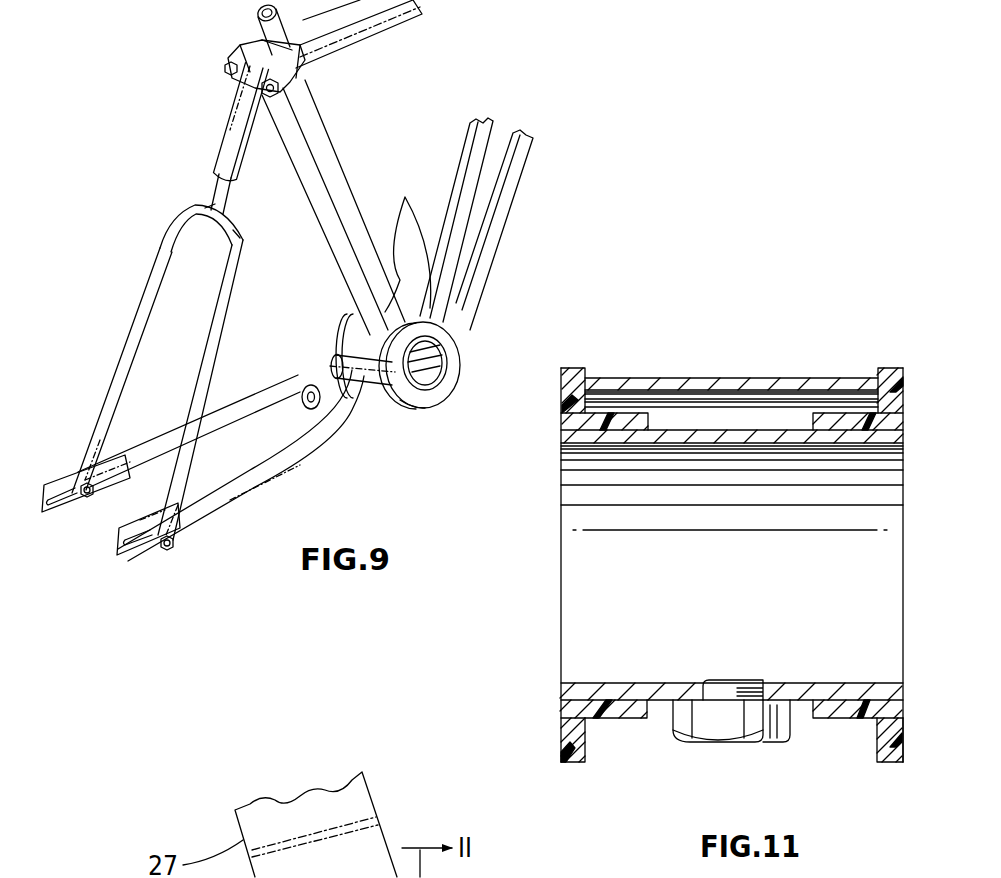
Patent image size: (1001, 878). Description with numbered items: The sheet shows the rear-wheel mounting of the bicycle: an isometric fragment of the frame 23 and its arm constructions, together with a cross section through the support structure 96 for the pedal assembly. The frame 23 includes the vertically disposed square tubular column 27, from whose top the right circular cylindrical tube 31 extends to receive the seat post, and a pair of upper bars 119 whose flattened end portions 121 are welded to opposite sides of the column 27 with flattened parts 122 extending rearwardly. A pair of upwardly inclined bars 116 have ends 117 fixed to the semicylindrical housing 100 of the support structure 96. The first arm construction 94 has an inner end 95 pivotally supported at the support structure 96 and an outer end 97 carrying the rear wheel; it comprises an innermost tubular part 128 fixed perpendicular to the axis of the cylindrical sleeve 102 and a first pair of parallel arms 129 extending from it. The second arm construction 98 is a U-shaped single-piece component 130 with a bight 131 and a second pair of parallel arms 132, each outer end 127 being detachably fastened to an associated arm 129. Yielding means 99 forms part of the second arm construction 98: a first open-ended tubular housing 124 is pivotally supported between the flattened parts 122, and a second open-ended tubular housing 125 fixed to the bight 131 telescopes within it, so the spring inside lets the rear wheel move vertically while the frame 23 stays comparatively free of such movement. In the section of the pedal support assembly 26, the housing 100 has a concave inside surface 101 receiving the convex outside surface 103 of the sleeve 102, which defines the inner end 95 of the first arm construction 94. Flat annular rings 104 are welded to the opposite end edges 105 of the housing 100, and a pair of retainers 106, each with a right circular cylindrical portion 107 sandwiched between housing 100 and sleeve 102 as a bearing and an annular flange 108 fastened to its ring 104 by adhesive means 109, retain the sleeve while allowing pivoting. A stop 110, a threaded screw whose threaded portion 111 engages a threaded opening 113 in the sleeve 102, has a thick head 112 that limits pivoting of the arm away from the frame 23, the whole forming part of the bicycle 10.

In FIG. 9, the bicycle 10 is at (332, 365).
In FIG. 9, the frame 23 is at (348, 164).
In FIG. 11, the pedal crank bearing assembly 26 is at (871, 348).
In FIG. 9, the tubular column 27 is at (337, 133).
In FIG. 9, the right circular cylindrical tube 31 is at (258, 26).
In FIG. 9, the first arm construction 94 is at (325, 440).
In FIG. 9, the inner end 95 is at (318, 378).
In FIG. 9, the support structure 96 is at (462, 352).
In FIG. 9, the outer end 97 is at (200, 520).
In FIG. 9, the second arm construction 98 is at (160, 222).
In FIG. 9, the yielding means 99 is at (213, 130).
In FIG. 11, the semicylindrical housing 100 is at (718, 377).
In FIG. 11, the concave inside surface 101 is at (773, 403).
In FIG. 9, the cylindrical sleeve 102 is at (442, 384).
In FIG. 11, the cylindrical sleeve 102 is at (657, 703).
In FIG. 11, the convex outside surface 103 is at (727, 433).
In FIG. 11, the flat annular rings 104 is at (570, 723).
In FIG. 11, the end edges 105 is at (582, 377).
In FIG. 9, the retainers 106 is at (425, 400).
In FIG. 11, the retainers 106 is at (903, 748).
In FIG. 11, the right circular cylindrical portion 107 is at (627, 423).
In FIG. 11, the annular flange 108 is at (903, 400).
In FIG. 11, the adhesive means 109 is at (585, 733).
In FIG. 11, the stop 110 is at (762, 744).
In FIG. 11, the threaded portion 111 is at (688, 687).
In FIG. 11, the head 112 is at (737, 743).
In FIG. 11, the threaded opening 113 is at (710, 680).
In FIG. 9, the upwardly inclined bars 116 is at (495, 127).
In FIG. 9, the opposite ends 117 is at (403, 247).
In FIG. 9, the upper bars 119 is at (405, 25).
In FIG. 9, the flattened end portions 121 is at (255, 50).
In FIG. 9, the flattened parts 122 is at (252, 78).
In FIG. 9, the first open-ended tubular housing 124 is at (210, 145).
In FIG. 9, the second open-ended tubular housing 125 is at (205, 190).
In FIG. 9, the outer end 127 is at (90, 437).
In FIG. 9, the innermost tubular part 128 is at (338, 318).
In FIG. 9, the first pair of parallel arms 129 is at (150, 430).
In FIG. 9, the U-shaped single-piece component 130 is at (240, 236).
In FIG. 9, the bight 131 is at (235, 218).
In FIG. 9, the second pair of parallel arms 132 is at (212, 288).